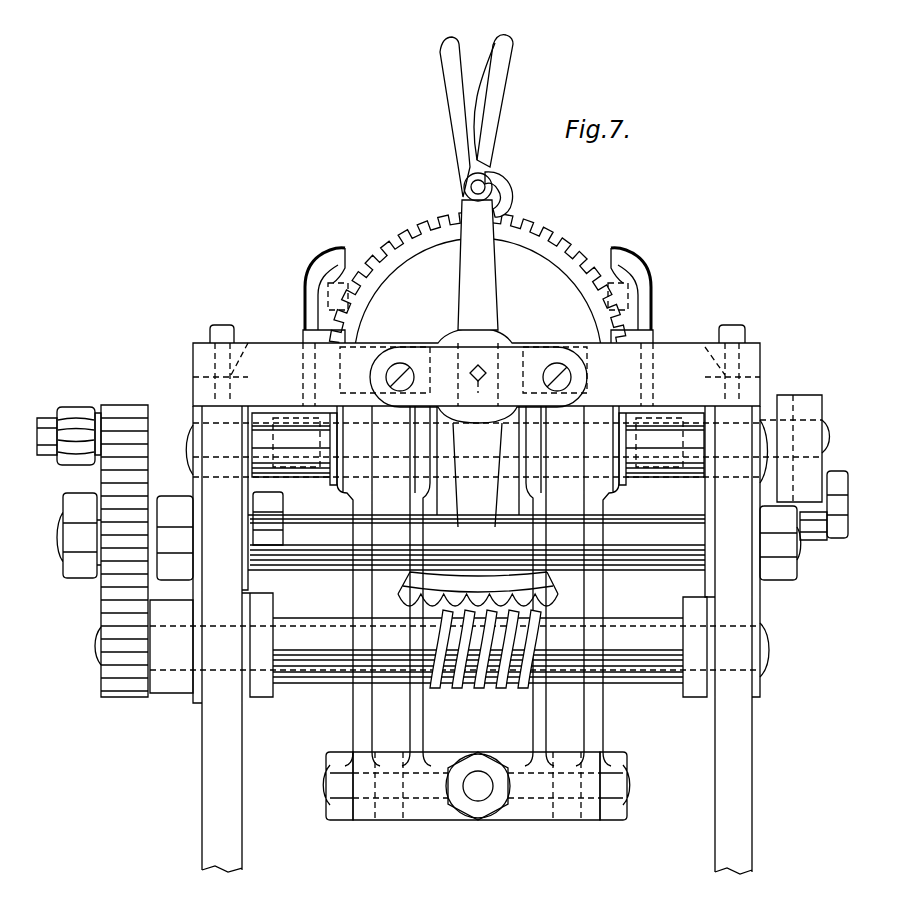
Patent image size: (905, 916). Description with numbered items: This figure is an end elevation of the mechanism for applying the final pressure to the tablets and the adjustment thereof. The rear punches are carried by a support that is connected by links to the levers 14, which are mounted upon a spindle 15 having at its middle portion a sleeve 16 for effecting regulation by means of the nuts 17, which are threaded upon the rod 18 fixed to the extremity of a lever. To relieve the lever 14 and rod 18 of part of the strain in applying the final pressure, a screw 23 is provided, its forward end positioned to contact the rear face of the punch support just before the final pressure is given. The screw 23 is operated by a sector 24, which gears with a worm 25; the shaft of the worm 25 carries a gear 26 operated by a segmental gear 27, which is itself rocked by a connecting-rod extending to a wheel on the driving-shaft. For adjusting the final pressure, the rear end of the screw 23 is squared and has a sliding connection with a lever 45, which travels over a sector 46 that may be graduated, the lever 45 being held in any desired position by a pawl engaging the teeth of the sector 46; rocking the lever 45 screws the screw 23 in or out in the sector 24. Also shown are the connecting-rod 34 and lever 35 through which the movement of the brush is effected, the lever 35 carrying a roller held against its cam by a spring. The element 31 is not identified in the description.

The levers 14 is at (388, 712).
The spindle 15 is at (340, 783).
The sleeve 16 is at (445, 808).
The nuts 17 is at (480, 806).
The rod 18 is at (480, 785).
The screw 23 is at (463, 385).
The sector 24 is at (520, 582).
The worm 25 is at (488, 686).
The gear 26 is at (115, 655).
The segmental gear 27 is at (140, 430).
The guide brackets 31 is at (320, 262).
The connecting-rod 34 is at (800, 483).
The lever 35 is at (818, 532).
The lever 45 is at (462, 110).
The sector 46 is at (398, 242).